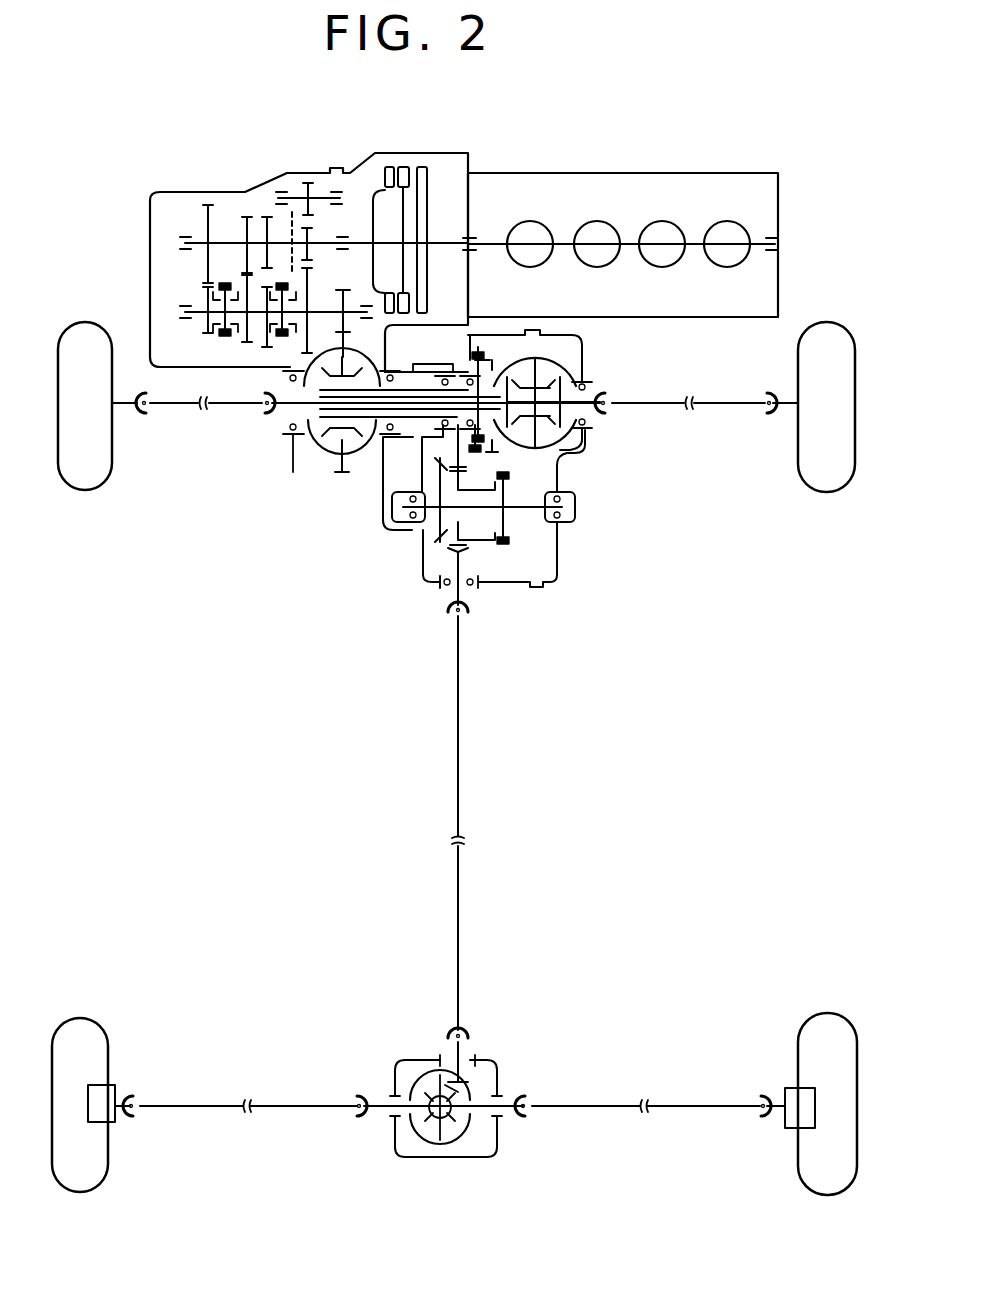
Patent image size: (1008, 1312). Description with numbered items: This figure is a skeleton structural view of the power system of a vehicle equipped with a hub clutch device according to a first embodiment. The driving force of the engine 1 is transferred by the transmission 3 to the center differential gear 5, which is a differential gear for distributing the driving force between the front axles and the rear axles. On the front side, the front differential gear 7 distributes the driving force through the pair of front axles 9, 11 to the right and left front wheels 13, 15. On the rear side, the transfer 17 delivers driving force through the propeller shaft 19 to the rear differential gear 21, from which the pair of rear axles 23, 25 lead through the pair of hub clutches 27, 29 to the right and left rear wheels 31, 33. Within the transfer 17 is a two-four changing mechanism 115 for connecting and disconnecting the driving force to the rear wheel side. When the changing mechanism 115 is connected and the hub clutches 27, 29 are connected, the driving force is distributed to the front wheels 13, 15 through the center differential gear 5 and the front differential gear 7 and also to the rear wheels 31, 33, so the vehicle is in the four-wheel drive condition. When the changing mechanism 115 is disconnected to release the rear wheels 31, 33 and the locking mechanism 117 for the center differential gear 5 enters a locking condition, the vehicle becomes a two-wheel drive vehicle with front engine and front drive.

The engine 1 is at (605, 183).
The transmission 3 is at (226, 203).
The center differential gear 5 is at (316, 452).
The front differential gear 7 is at (572, 354).
The front axle 9 is at (188, 421).
The front axle 11 is at (705, 421).
The front wheel 13 is at (103, 473).
The front wheel 15 is at (813, 495).
The transfer 17 is at (401, 547).
The propeller shaft 19 is at (461, 758).
The rear differential gear 21 is at (482, 1082).
The rear axle 23 is at (270, 1120).
The rear axle 25 is at (665, 1121).
The hub clutch 27 is at (110, 1090).
The hub clutch 29 is at (790, 1090).
The rear wheel 31 is at (92, 1027).
The rear wheel 33 is at (813, 1025).
The 2-4 changing mechanism 115 is at (499, 550).
The locking mechanism 117 is at (498, 456).